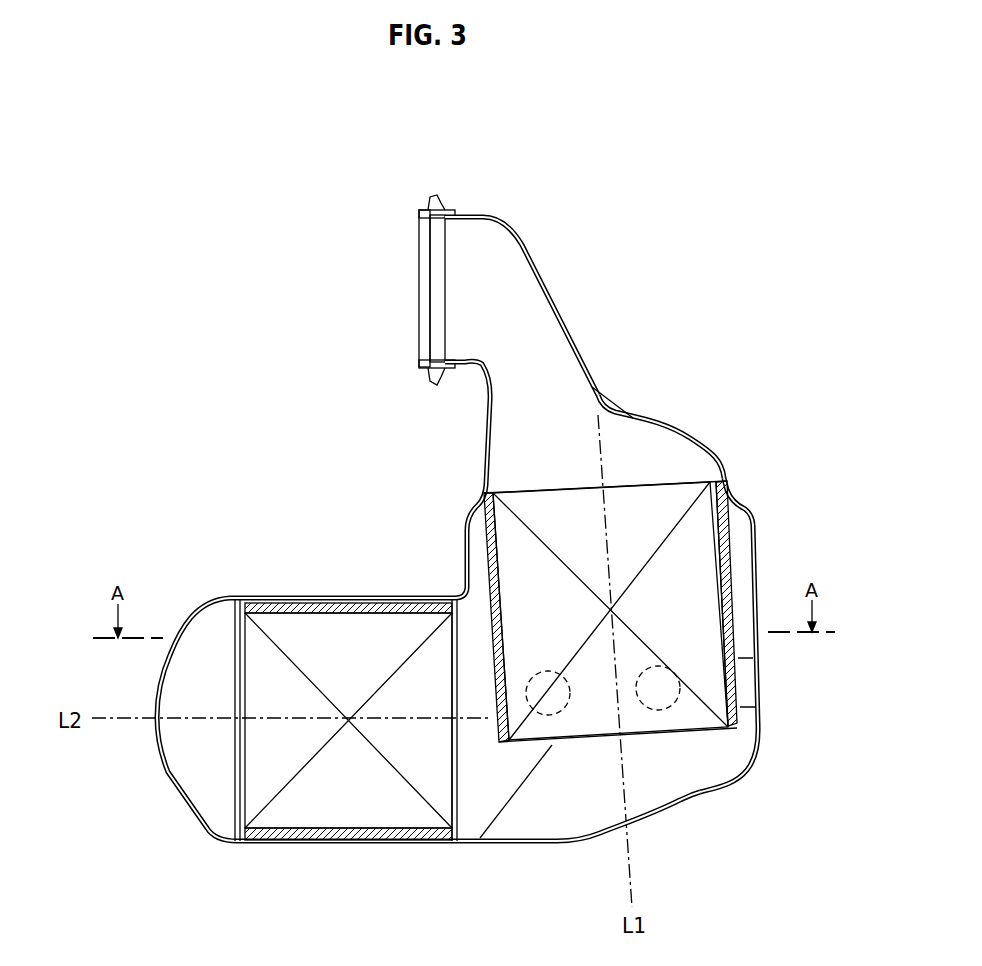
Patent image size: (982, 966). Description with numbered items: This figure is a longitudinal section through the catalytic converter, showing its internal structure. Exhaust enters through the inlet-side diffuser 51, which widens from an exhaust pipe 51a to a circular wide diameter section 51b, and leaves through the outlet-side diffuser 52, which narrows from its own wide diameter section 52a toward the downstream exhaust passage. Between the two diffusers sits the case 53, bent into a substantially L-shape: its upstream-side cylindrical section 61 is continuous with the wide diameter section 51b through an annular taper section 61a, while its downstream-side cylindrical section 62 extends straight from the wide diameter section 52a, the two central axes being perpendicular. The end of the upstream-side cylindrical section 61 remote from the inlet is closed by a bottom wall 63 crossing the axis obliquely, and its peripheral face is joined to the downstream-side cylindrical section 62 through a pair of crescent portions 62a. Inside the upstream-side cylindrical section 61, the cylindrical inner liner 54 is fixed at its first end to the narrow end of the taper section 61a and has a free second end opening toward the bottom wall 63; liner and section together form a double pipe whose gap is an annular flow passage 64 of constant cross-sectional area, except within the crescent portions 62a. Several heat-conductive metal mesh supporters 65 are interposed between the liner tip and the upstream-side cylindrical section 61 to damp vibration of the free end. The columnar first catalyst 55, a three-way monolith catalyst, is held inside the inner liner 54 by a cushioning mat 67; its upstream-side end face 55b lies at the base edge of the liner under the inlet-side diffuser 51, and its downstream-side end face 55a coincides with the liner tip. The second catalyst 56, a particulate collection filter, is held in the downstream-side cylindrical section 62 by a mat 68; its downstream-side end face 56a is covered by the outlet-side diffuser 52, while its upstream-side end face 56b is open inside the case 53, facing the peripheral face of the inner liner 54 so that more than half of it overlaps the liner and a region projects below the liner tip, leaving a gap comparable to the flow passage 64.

The inlet-side diffuser 51 is at (555, 297).
The exhaust pipe 51a is at (508, 231).
The wide diameter section 51b is at (735, 458).
The outlet-side diffuser 52 is at (172, 780).
The wide diameter section 52a is at (218, 596).
The case 53 is at (758, 772).
The inner liner 54 is at (743, 553).
The first catalyst 55 is at (693, 627).
The downstream-side end face 55a is at (630, 740).
The upstream-side end face 55b is at (655, 475).
The second catalyst 56 is at (347, 806).
The downstream-side end face 56a is at (237, 778).
The upstream-side end face 56b is at (458, 783).
The upstream-side cylindrical section 61 is at (742, 652).
The taper section 61a is at (470, 515).
The downstream-side cylindrical section 62 is at (333, 600).
The crescent portions 62a is at (490, 790).
The bottom wall 63 is at (680, 803).
The flow passage 64 is at (743, 520).
The supporters 65 is at (747, 688).
The mat 67 is at (742, 585).
The mat 68 is at (292, 843).